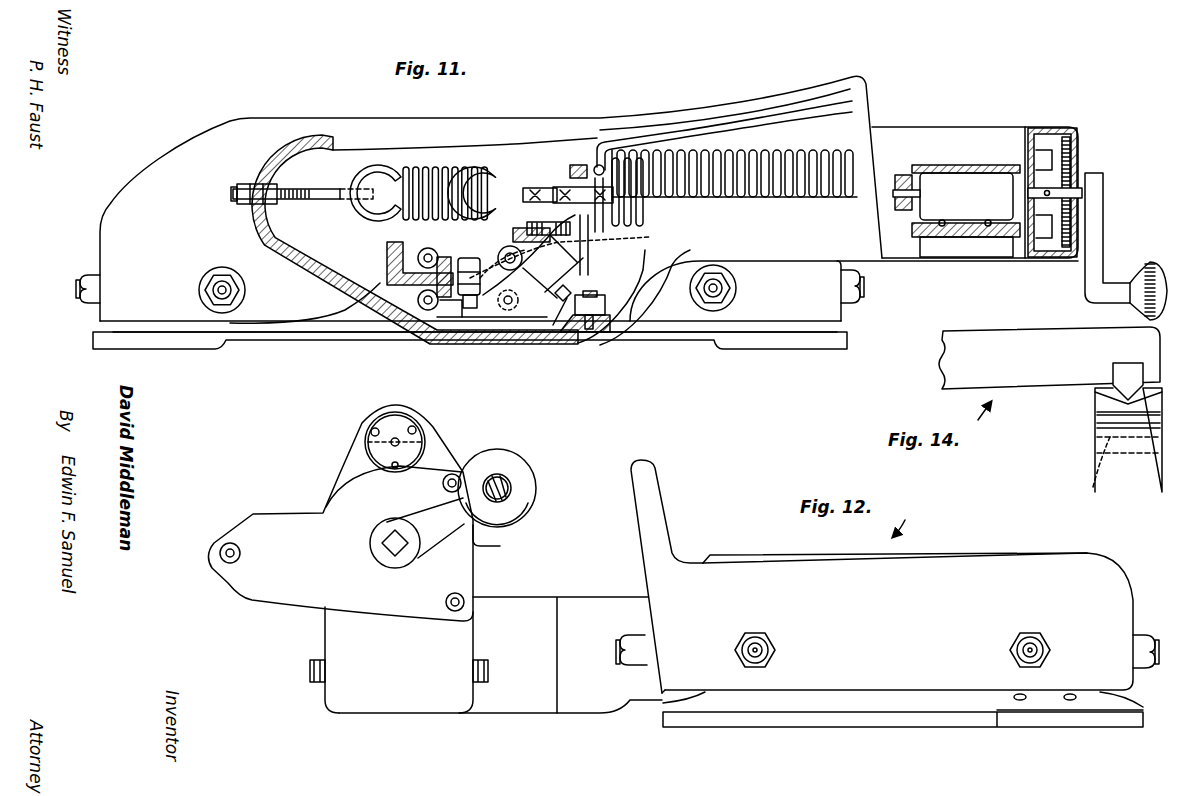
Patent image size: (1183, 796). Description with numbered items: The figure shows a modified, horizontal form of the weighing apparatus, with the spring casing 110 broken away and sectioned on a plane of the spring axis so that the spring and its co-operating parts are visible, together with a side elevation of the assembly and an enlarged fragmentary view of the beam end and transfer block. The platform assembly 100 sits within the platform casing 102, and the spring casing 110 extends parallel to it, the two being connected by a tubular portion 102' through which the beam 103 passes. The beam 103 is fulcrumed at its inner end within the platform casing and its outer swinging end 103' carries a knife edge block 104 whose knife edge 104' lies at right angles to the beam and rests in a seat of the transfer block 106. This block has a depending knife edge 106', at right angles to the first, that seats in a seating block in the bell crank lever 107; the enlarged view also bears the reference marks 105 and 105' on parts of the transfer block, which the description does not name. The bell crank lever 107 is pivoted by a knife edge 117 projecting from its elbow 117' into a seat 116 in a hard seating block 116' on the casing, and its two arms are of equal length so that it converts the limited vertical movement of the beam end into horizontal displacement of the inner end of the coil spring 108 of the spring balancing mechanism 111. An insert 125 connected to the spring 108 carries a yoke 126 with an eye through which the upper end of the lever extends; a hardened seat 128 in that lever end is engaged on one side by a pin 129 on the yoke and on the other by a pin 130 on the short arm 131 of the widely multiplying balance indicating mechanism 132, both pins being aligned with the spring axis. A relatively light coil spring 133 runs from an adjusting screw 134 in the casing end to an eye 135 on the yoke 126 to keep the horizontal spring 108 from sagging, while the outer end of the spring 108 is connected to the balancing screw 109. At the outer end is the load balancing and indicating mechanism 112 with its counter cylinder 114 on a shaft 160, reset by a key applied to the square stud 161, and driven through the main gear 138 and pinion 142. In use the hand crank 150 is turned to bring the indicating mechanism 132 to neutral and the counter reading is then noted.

In FIG. 12, the platform assembly 100 is at (973, 550).
In FIG. 11, the platform casing 102 is at (577, 212).
In FIG. 12, the platform casing 102 is at (642, 576).
In FIG. 12, the tubular portion 102' is at (500, 619).
In FIG. 11, the beam 103 is at (712, 273).
In FIG. 14, the beam 103 is at (1049, 346).
In FIG. 11, the outer swinging end of the beam 103' is at (487, 265).
In FIG. 14, the outer swinging end of the beam 103' is at (1105, 342).
In FIG. 11, the knife edge block 104 is at (458, 265).
In FIG. 14, the knife edge block 104 is at (1089, 378).
In FIG. 11, the knife edge 104' is at (525, 266).
In FIG. 14, the knife edge 104' is at (1092, 399).
In FIG. 14, the cutting blade 105 is at (1087, 441).
In FIG. 14, the blade edge 105' is at (1095, 465).
In FIG. 11, the transfer block 106 is at (428, 333).
In FIG. 11, the depending knife edge 106' is at (432, 346).
In FIG. 11, the bell crank lever 107 is at (582, 270).
In FIG. 14, the bell crank lever 107 is at (1145, 487).
In FIG. 11, the coil spring 108 is at (760, 150).
In FIG. 12, the balancing screw 109 is at (345, 482).
In FIG. 11, the spring casing 110 is at (333, 270).
In FIG. 12, the spring casing 110 is at (325, 628).
In FIG. 11, the spring balancing mechanism 111 is at (759, 226).
In FIG. 11, the load balancing and indicating mechanism 112 is at (983, 127).
In FIG. 11, the counter cylinder 114 is at (981, 199).
In FIG. 11, the seat 116 is at (596, 341).
In FIG. 11, the hard seating block 116' is at (607, 300).
In FIG. 11, the knife edge 117 is at (536, 337).
In FIG. 11, the elbow 117' is at (562, 337).
In FIG. 11, the insert 125 is at (662, 170).
In FIG. 11, the yoke 126 is at (568, 223).
In FIG. 11, the hardened seat 128 is at (588, 252).
In FIG. 11, the pin 129 is at (582, 163).
In FIG. 11, the pin 130 is at (645, 246).
In FIG. 11, the short arm 131 is at (648, 222).
In FIG. 11, the balance indicating mechanism 132 is at (740, 122).
In FIG. 11, the light coil spring 133 is at (432, 165).
In FIG. 11, the adjusting screw 134 is at (330, 189).
In FIG. 11, the eye 135 is at (543, 186).
In FIG. 11, the main gear 138 is at (1050, 128).
In FIG. 11, the pinion 142 is at (1075, 185).
In FIG. 11, the hand crank 150 is at (1105, 272).
In FIG. 12, the hand crank 150 is at (490, 532).
In FIG. 11, the shaft 160 is at (1050, 190).
In FIG. 11, the stud 161 is at (903, 190).